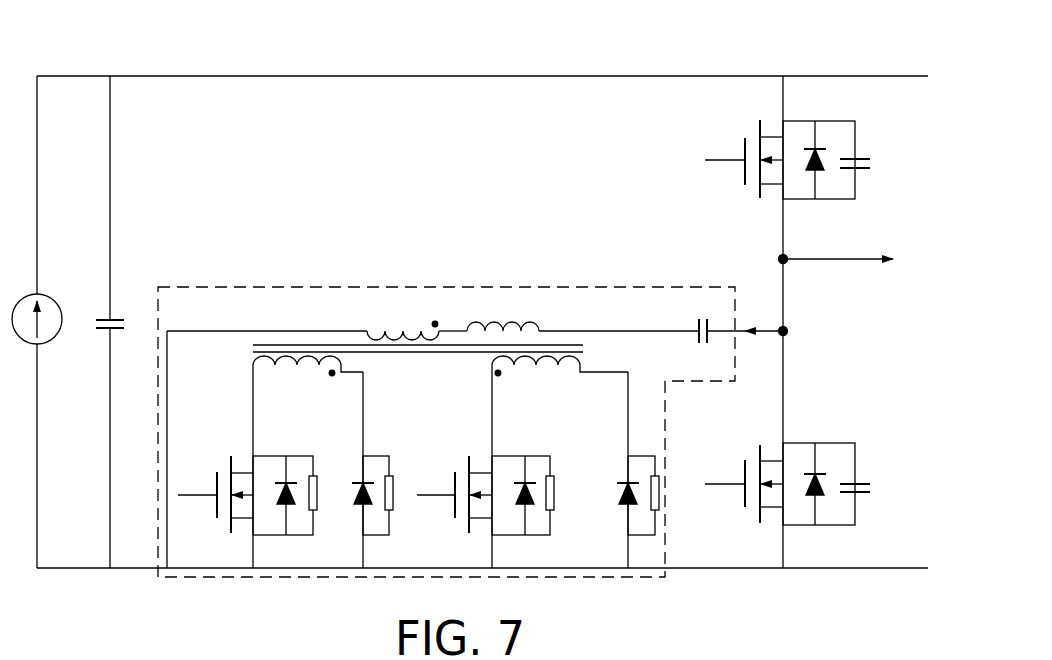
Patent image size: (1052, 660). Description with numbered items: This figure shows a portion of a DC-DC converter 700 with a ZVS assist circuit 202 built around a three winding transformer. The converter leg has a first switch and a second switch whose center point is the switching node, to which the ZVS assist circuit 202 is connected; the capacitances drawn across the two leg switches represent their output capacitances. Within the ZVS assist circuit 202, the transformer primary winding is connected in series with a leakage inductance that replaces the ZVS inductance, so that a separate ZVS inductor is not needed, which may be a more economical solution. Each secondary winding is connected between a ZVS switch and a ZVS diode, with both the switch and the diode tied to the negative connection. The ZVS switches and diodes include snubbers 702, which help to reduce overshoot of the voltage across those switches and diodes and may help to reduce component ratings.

The DC-DC converter 700 is at (120, 56).
The ZVS assist circuit 202 is at (446, 411).
The snubber 702 is at (317, 491).